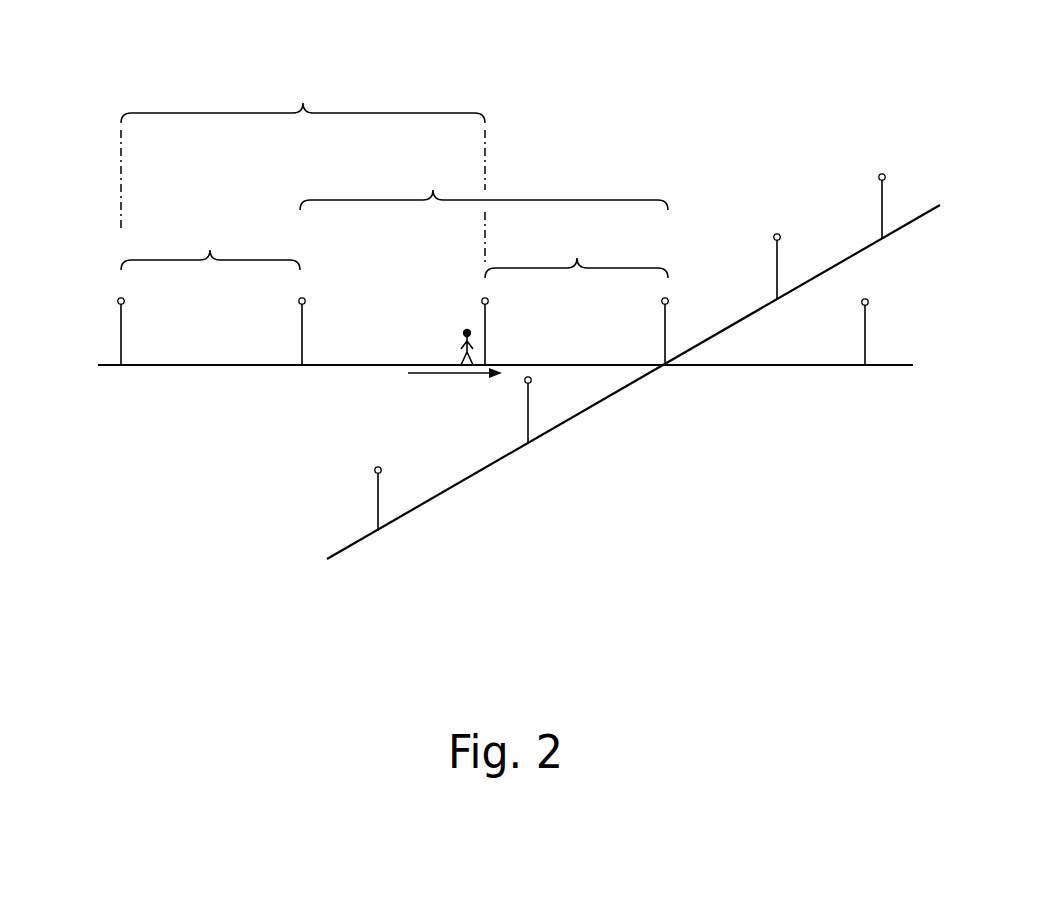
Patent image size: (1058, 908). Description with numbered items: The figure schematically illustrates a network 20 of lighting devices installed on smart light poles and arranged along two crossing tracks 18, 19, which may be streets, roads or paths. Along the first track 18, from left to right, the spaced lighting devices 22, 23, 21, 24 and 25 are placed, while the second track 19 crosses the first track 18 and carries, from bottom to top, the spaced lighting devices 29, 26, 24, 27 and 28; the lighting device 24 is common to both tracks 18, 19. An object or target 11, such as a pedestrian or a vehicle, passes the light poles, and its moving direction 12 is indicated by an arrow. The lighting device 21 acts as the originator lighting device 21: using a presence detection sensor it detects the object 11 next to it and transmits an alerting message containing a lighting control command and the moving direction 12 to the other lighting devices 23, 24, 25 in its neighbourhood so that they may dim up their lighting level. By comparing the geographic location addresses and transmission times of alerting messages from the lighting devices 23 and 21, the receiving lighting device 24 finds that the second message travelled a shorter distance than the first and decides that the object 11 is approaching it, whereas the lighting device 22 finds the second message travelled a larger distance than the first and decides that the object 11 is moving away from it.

The object or target 11 is at (456, 339).
The moving direction 12 is at (419, 378).
The track 18 is at (226, 368).
The track 19 is at (460, 483).
The network of lighting devices 20 is at (720, 148).
The originator lighting device 21 is at (481, 318).
The lighting device 22 is at (117, 316).
The lighting device 23 is at (298, 316).
The lighting device 24 is at (661, 318).
The lighting device 25 is at (869, 332).
The lighting device 26 is at (533, 427).
The lighting device 27 is at (773, 260).
The lighting device 28 is at (878, 204).
The lighting device 29 is at (373, 496).